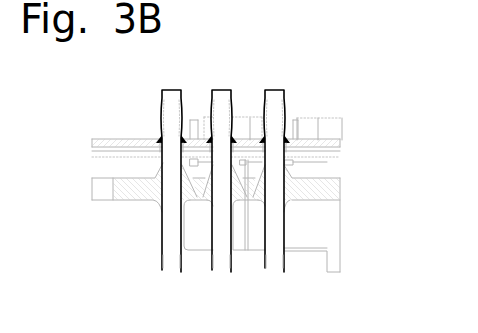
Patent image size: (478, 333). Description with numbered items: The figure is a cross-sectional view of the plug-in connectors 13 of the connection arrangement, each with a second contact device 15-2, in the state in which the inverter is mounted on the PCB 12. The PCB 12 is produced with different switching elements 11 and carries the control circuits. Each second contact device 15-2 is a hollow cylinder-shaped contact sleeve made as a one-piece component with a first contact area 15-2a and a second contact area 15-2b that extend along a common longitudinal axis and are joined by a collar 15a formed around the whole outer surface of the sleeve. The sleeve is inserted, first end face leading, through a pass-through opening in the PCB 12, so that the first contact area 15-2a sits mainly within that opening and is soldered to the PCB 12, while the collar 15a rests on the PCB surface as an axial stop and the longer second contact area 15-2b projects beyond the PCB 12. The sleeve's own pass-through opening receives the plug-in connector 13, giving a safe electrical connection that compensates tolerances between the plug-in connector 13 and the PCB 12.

The switching elements 11 is at (335, 130).
The PCB 12 is at (337, 189).
The plug-in connector 13 is at (272, 262).
The second contact device 15-2 is at (178, 82).
The first contact area 15-2a is at (211, 143).
The second contact area 15-2b is at (162, 125).
The collar 15a is at (159, 139).